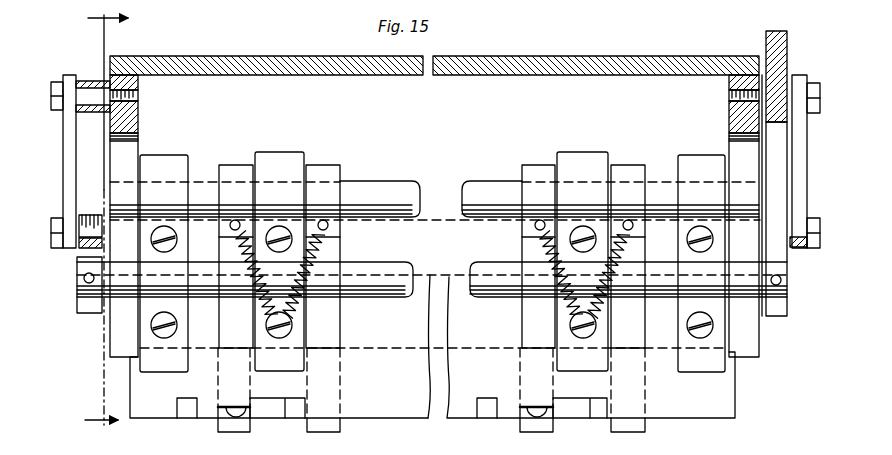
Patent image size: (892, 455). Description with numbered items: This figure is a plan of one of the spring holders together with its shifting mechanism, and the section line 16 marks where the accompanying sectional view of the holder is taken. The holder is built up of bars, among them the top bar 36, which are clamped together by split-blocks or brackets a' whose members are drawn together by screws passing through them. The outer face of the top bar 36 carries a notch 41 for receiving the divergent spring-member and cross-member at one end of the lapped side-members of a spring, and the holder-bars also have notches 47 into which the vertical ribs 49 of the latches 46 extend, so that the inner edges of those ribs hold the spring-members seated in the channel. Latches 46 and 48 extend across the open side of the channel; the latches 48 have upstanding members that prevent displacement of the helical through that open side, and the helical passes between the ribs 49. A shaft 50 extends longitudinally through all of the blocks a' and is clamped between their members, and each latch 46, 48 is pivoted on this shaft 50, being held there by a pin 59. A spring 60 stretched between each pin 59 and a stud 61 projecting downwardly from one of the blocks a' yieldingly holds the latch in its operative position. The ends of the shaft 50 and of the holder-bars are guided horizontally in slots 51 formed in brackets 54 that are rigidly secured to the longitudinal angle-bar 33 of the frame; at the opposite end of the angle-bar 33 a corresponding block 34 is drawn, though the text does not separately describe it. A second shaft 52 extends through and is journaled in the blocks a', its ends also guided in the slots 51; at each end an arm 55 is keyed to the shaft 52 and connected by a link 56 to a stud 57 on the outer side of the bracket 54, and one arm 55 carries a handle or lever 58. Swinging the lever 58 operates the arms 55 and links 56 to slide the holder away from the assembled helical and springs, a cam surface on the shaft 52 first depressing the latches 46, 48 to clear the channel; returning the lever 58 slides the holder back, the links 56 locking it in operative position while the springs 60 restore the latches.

The section line 16— 16 is at (106, 225).
The longitudinal angle-bar 33 is at (168, 64).
The end block 34 is at (729, 89).
The top bar 36 is at (735, 393).
The notch 41 is at (184, 413).
The latch 46 is at (236, 430).
The notch 47 is at (248, 402).
The latch 48 is at (310, 427).
The vertical rib 49 is at (236, 410).
The shaft 50 is at (396, 186).
The slot 51 is at (118, 157).
The shaft 52 is at (389, 263).
The bracket 54 is at (128, 117).
The arm 55 is at (77, 308).
The link 56 is at (63, 170).
The stud 57 is at (83, 80).
The lever 58 is at (788, 52).
The pin 59 is at (329, 226).
The spring 60 is at (300, 308).
The stud 61 is at (284, 330).
The split-block a' is at (432, 249).